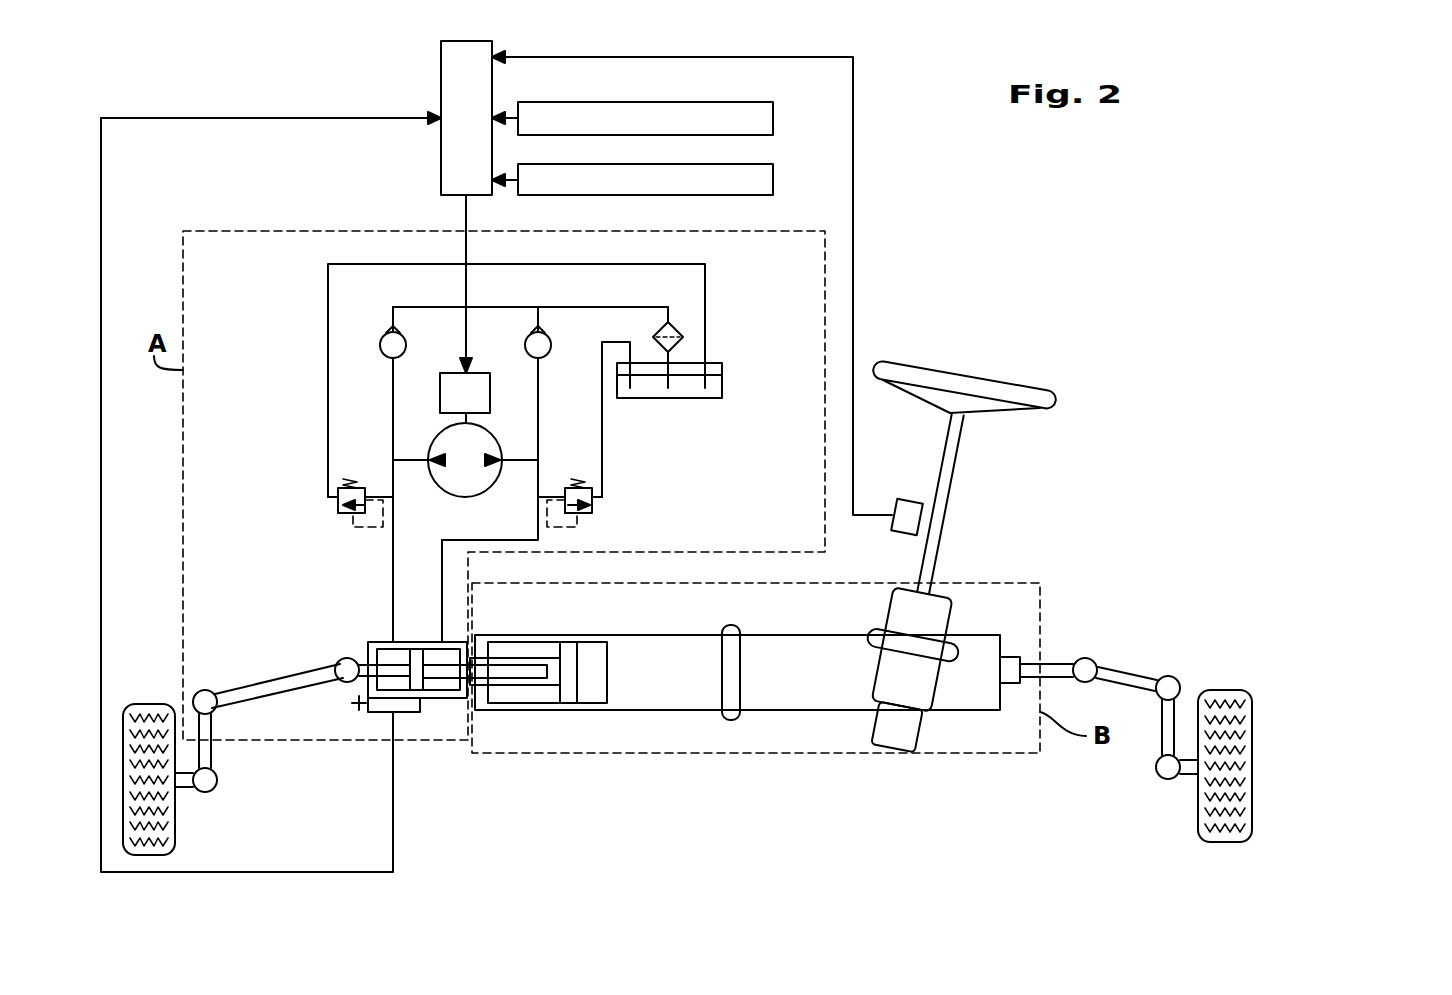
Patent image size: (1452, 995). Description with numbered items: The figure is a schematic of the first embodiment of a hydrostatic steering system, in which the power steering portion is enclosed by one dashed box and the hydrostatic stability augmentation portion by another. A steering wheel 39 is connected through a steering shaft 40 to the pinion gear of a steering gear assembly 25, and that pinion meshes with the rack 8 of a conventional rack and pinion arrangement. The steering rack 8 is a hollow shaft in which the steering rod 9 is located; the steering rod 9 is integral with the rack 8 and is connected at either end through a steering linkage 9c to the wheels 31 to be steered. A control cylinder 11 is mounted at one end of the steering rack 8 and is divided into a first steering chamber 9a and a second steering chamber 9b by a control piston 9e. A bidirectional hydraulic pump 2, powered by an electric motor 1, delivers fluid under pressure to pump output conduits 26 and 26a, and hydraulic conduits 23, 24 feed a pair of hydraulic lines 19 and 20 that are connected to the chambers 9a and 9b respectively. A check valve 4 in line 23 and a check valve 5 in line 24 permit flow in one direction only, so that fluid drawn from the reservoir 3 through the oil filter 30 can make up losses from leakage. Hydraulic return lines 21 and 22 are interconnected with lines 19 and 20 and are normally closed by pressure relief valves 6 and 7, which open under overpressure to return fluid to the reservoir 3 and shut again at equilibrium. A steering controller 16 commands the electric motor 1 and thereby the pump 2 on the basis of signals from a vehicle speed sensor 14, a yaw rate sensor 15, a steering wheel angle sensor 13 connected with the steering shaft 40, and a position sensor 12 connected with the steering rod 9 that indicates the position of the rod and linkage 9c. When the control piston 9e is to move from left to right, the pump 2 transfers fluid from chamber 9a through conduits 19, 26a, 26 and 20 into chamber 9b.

The electric motor 1 is at (478, 385).
The hydraulic pump 2 is at (450, 442).
The reservoir 3 is at (680, 387).
The check valve 4 is at (530, 334).
The check valve 5 is at (387, 333).
The pressure relief valve 6 is at (333, 498).
The pressure relief valve 7 is at (595, 502).
The steering rack 8 is at (597, 671).
The steering rod 9 is at (495, 668).
The first steering chamber 9a is at (466, 641).
The second steering chamber 9b is at (385, 658).
The steering linkage 9c is at (1128, 676).
The control piston 9e is at (428, 683).
The control cylinder 11 is at (368, 705).
The position sensor 12 is at (402, 713).
The steering wheel angle sensor 13 is at (908, 521).
The vehicle speed sensor 14 is at (773, 110).
The yaw rate sensor 15 is at (773, 170).
The steering controller 16 is at (443, 46).
The hydraulic line 19 is at (445, 585).
The hydraulic line 20 is at (393, 588).
The hydraulic return line 21 is at (602, 450).
The hydraulic return line 22 is at (328, 358).
The hydraulic conduit 23 is at (538, 400).
The hydraulic conduit 24 is at (393, 400).
The steering gear assembly 25 is at (792, 697).
The pump output conduit 26 is at (413, 461).
The pump output conduit 26a is at (527, 459).
The oil filter 30 is at (724, 260).
The wheels 31 is at (1220, 715).
The steering wheel 39 is at (958, 384).
The steering shaft 40 is at (930, 558).